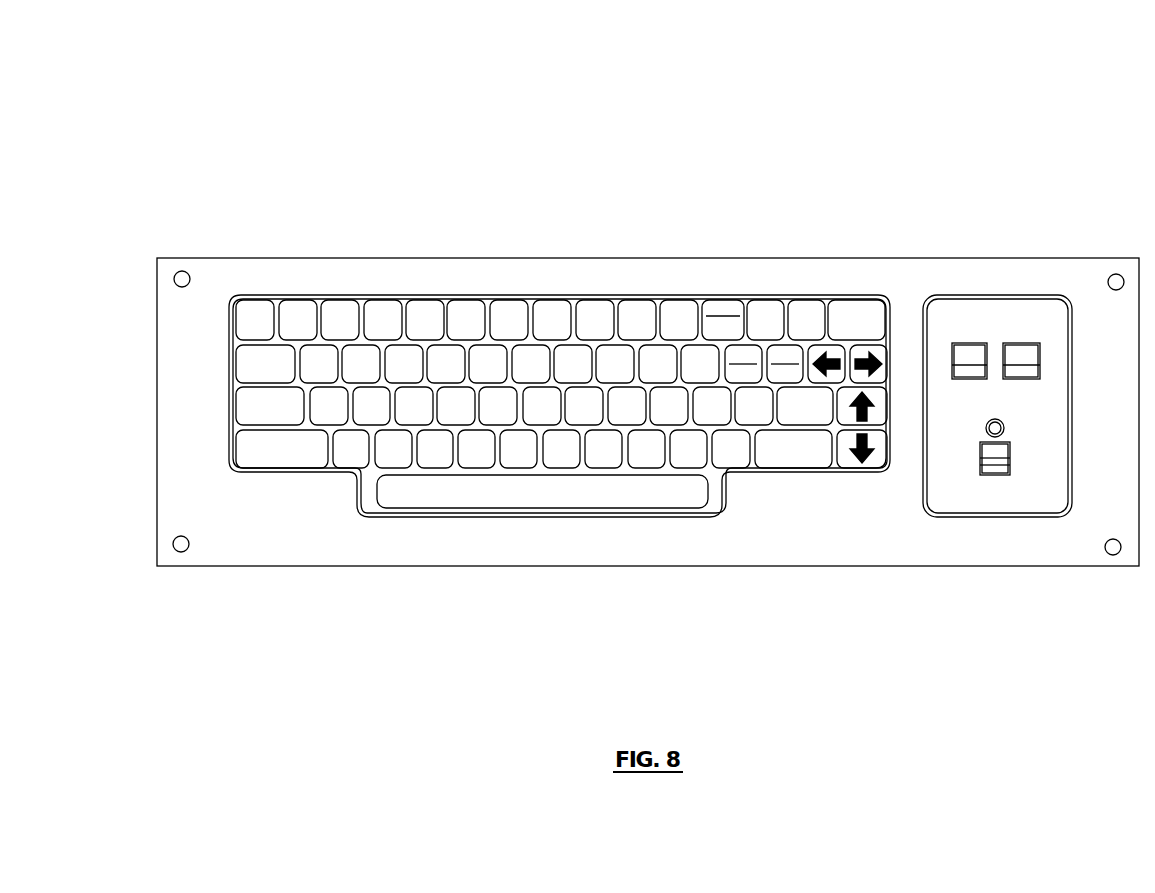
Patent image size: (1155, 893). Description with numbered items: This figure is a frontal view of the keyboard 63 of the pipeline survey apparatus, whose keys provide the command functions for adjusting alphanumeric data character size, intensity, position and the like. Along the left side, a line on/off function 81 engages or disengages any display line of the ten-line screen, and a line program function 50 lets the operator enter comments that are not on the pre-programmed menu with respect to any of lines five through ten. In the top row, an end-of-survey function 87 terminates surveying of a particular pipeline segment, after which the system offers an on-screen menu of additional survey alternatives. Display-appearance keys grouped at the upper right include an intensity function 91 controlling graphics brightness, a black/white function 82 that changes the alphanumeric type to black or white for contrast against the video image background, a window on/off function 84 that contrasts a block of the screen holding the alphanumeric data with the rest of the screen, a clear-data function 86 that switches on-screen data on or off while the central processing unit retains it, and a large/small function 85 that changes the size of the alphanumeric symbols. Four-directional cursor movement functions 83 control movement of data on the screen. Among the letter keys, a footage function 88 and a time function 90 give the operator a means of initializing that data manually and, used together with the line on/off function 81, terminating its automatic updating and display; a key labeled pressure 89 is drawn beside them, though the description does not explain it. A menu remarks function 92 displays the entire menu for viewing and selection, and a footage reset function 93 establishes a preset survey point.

The keyboard 63 is at (856, 96).
The four-directional cursor movement functions 83 is at (878, 487).
The end-of-survey function 87 is at (262, 312).
The line on/off function 81 is at (238, 368).
The line program function 50 is at (248, 398).
The footage function 88 is at (320, 403).
The pressure key 89 is at (380, 413).
The time function 90 is at (413, 396).
The intensity function 91 is at (724, 310).
The black/white function 82 is at (703, 327).
The window on/off function 84 is at (768, 308).
The clear-data function 86 is at (813, 308).
The large/small function 85 is at (792, 352).
The menu remarks function 92 is at (745, 372).
The footage reset function 93 is at (785, 387).